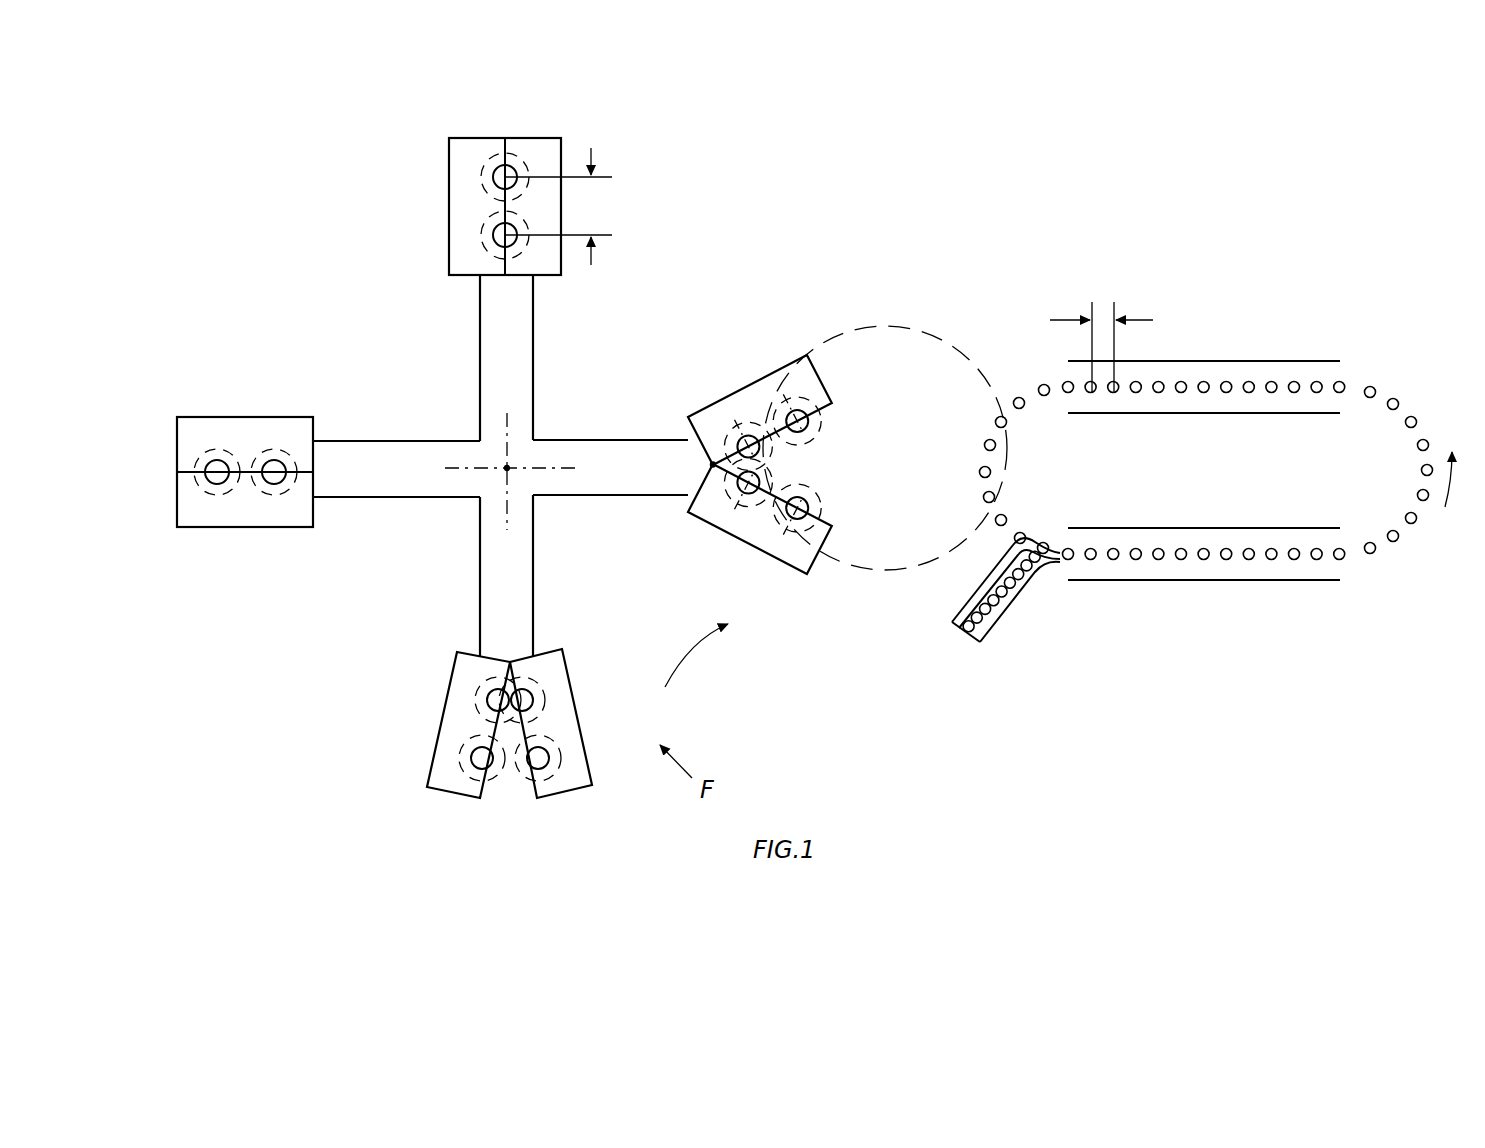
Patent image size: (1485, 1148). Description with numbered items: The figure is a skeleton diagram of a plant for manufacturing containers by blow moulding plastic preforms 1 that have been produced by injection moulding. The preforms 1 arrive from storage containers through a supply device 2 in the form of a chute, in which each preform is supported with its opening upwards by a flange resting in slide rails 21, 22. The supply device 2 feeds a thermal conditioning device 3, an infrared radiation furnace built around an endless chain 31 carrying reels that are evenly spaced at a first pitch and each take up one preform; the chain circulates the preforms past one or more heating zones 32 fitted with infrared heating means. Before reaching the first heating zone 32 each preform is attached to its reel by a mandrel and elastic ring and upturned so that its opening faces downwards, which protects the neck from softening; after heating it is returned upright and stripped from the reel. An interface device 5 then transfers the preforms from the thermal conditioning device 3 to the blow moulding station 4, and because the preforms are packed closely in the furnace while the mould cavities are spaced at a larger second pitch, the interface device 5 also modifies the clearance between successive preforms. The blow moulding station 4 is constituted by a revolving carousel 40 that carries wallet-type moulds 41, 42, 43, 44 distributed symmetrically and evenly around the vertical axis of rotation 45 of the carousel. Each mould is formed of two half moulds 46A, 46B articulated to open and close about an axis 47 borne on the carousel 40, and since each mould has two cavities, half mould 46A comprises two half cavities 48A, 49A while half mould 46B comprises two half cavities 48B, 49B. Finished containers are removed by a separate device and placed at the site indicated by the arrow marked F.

The plastic preform 1 is at (987, 617).
The supply device 2 is at (999, 600).
The slide rail 21 is at (978, 600).
The slide rail 22 is at (1012, 610).
The thermal conditioning device 3 is at (1254, 485).
The endless chain 31 is at (1372, 556).
The heating zone 32 is at (1262, 377).
The blow moulding station 4 is at (328, 665).
The revolving carousel 40 is at (517, 558).
The mould 41 is at (547, 267).
The mould 42 is at (255, 428).
The mould 43 is at (557, 670).
The mould 44 is at (700, 543).
The vertical axis of rotation 45 is at (507, 468).
The half mould 46A is at (791, 405).
The half mould 46B is at (791, 544).
The axis 47 is at (711, 465).
The half cavity 48A is at (757, 447).
The half cavity 48B is at (752, 485).
The half cavity 49A is at (803, 415).
The half cavity 49B is at (803, 515).
The interface device 5 is at (928, 332).